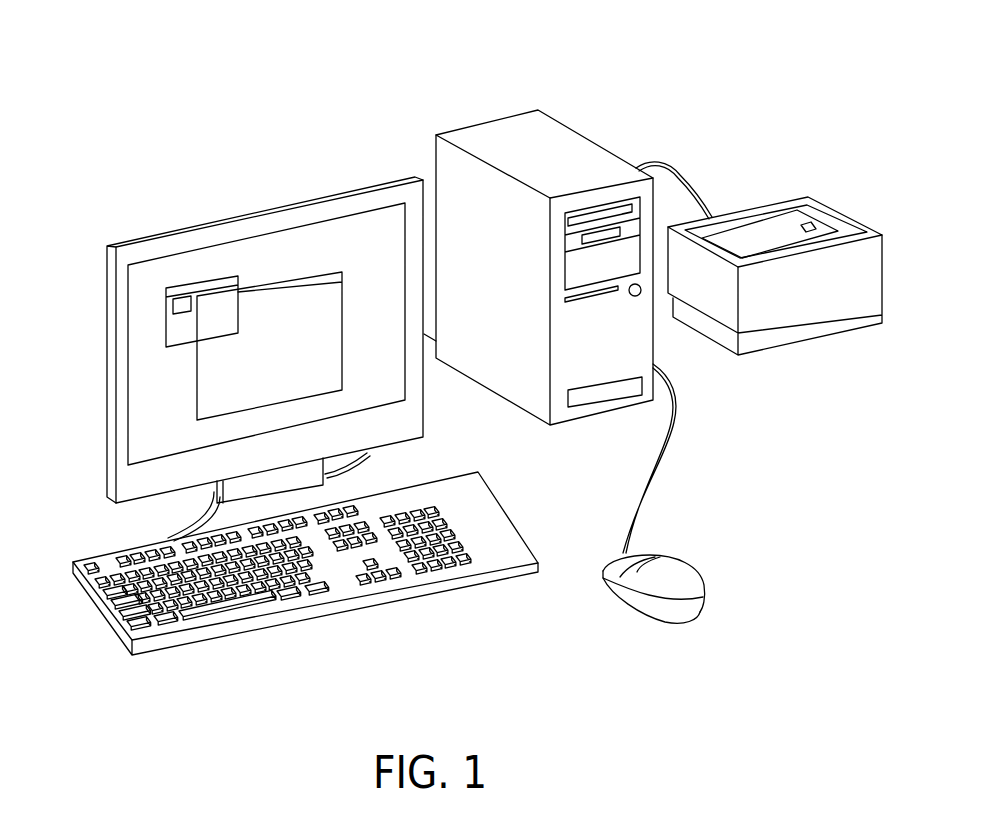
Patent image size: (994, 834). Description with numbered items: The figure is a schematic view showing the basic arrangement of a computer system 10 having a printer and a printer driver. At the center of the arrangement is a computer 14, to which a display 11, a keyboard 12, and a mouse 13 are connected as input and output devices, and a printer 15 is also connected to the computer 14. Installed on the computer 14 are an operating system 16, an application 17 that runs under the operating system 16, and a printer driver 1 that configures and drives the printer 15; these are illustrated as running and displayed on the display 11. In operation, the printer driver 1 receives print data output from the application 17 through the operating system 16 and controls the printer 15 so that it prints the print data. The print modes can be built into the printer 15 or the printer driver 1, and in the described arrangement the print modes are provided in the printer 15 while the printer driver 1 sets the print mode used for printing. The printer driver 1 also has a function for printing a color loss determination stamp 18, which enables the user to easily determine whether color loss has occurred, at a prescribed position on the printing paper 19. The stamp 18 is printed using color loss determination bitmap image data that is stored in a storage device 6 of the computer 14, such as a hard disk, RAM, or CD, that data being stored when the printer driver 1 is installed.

The computer system 10 is at (532, 86).
The display 11 is at (122, 316).
The operating system 16 is at (332, 237).
The application 17 is at (217, 368).
The printer driver 1 is at (218, 297).
The computer 14 is at (582, 149).
The storage device 6 is at (598, 393).
The printer 15 is at (785, 202).
The printing paper 19 is at (760, 240).
The color loss determination stamp 18 is at (810, 228).
The keyboard 12 is at (123, 633).
The mouse 13 is at (647, 583).